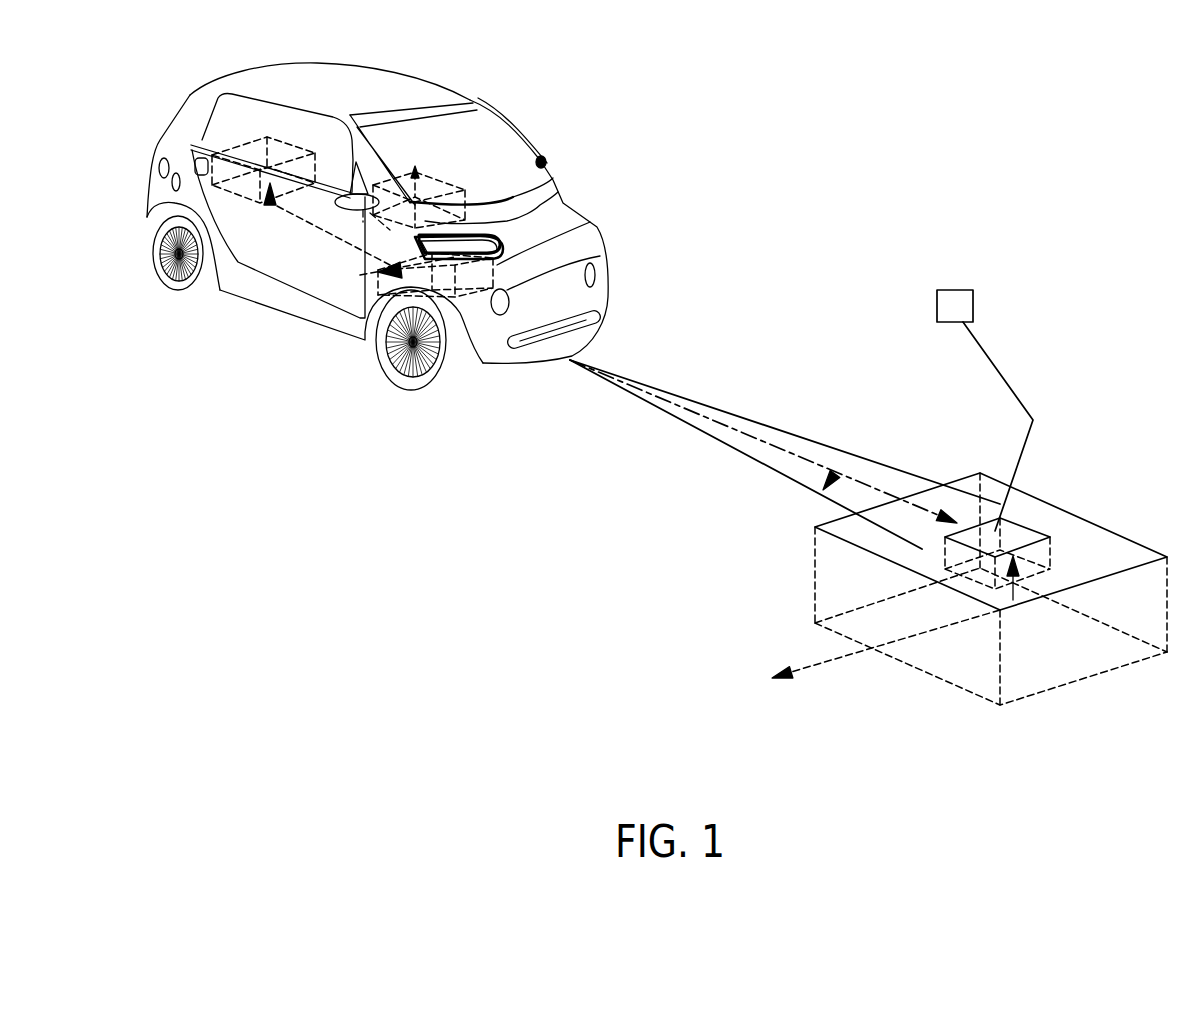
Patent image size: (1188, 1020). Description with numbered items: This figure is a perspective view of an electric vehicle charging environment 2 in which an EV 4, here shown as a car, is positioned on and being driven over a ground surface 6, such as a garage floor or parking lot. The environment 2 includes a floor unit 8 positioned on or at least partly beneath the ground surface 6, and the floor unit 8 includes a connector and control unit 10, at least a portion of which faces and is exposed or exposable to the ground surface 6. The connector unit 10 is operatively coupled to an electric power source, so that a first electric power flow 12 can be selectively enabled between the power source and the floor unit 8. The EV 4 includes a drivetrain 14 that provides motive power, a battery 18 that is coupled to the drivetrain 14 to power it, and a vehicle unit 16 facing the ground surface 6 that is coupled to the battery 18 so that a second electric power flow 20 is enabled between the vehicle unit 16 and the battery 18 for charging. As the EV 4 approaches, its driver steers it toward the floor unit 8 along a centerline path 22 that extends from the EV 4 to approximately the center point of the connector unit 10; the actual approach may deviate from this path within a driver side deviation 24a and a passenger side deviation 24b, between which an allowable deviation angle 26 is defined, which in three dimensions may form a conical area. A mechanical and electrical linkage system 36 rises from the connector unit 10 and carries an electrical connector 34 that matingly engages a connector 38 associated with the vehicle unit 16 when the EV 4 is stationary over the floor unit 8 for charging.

The electric vehicle (EV) charging environment 2 is at (1053, 148).
The electric vehicle (EV) 4 is at (503, 124).
The ground surface 6 is at (331, 372).
The floor unit 8 is at (1105, 529).
The connector and control unit 10 is at (1015, 531).
The first electric power flow 12 is at (800, 663).
The drivetrain 14 is at (465, 188).
The vehicle unit 16 is at (437, 290).
The battery 18 is at (267, 137).
The second electric power flow 20 is at (330, 240).
The centerline path 22 is at (742, 423).
The driver side deviation 24a is at (897, 467).
The passenger side deviation 24b is at (647, 402).
The allowable deviation angle 26 is at (835, 474).
The electrical connector 34 is at (963, 303).
The mechanical and electrical linkage system 36 is at (993, 360).
The connector 38 is at (587, 224).